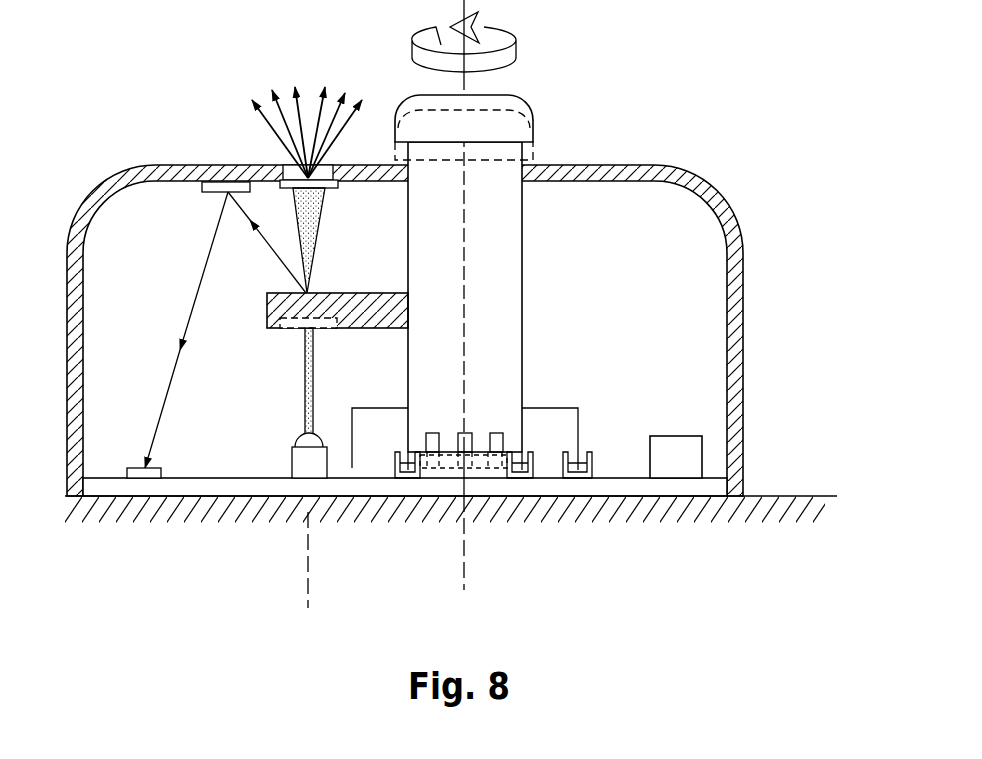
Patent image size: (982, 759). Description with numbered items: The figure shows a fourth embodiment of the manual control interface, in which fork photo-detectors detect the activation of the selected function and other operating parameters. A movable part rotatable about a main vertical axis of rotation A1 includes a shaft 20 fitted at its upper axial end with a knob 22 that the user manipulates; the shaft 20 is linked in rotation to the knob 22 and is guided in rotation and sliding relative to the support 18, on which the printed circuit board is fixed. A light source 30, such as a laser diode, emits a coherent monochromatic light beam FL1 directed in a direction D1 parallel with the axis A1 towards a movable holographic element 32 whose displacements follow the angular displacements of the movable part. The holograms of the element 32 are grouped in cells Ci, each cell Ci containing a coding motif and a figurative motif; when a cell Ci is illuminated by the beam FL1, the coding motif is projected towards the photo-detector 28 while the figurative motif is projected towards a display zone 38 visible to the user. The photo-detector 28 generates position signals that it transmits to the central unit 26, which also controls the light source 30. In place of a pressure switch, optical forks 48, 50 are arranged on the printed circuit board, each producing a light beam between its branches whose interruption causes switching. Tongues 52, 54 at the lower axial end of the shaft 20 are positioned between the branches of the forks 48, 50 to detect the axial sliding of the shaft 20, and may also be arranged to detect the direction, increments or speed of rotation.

The support 18 is at (797, 496).
The shaft 20 is at (524, 265).
The knob 22 is at (520, 97).
The central unit 26 is at (673, 437).
The photo-detector 28 is at (133, 465).
The light source 30 is at (287, 440).
The movable holographic element 32 is at (264, 314).
The display zone 38 is at (283, 155).
The optical fork 48 is at (397, 443).
The optical fork 50 is at (598, 463).
The tongue 52 is at (474, 432).
The tongue 54 is at (582, 417).
The cell Ci is at (290, 330).
The light beam FL1 is at (300, 375).
The direction D1 is at (308, 558).
The axis of rotation A1 is at (464, 562).